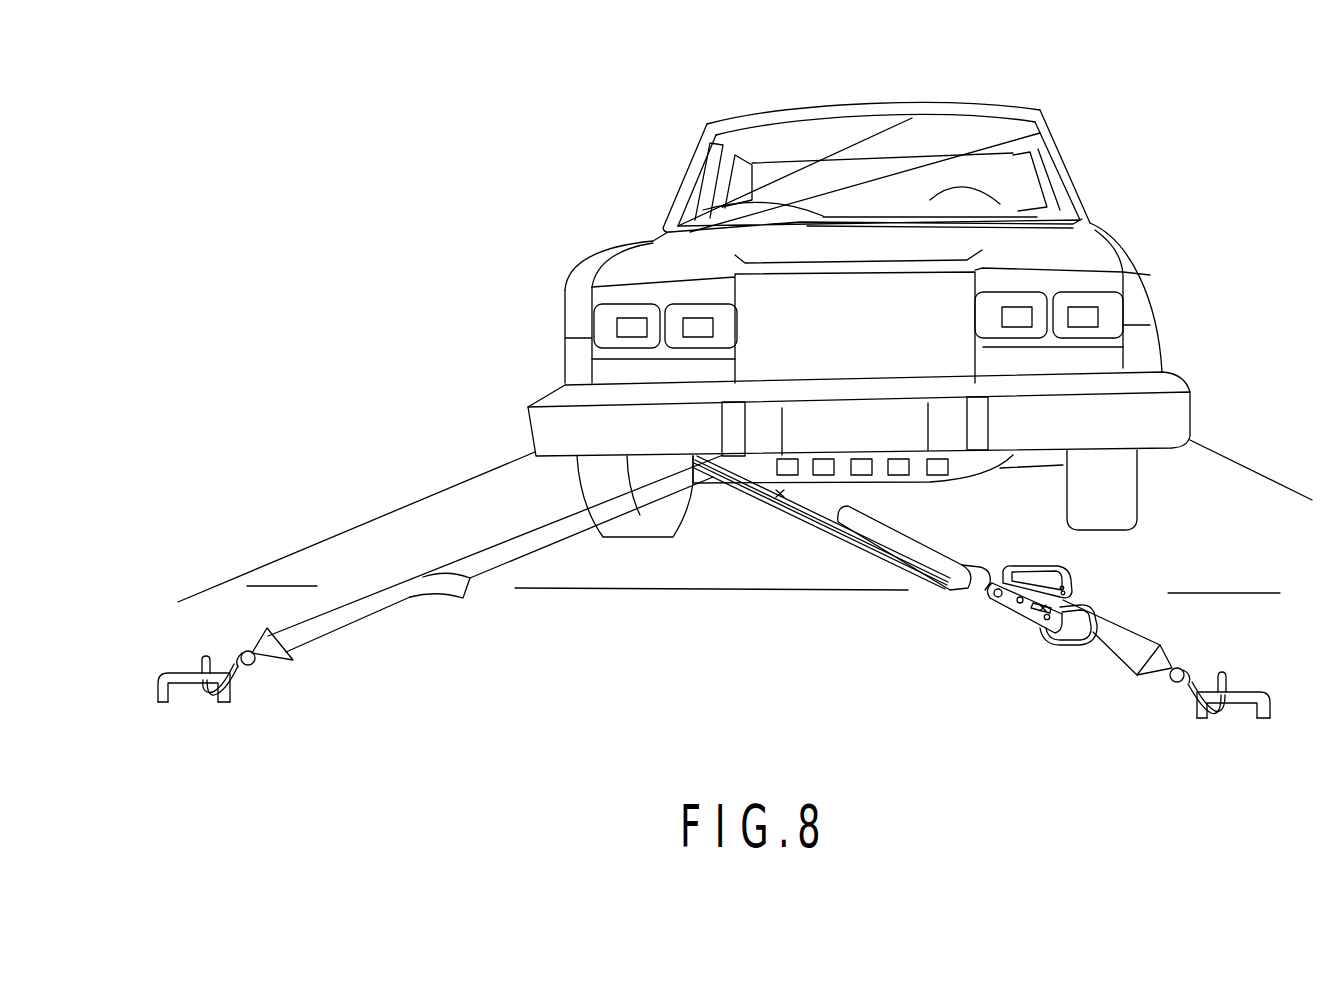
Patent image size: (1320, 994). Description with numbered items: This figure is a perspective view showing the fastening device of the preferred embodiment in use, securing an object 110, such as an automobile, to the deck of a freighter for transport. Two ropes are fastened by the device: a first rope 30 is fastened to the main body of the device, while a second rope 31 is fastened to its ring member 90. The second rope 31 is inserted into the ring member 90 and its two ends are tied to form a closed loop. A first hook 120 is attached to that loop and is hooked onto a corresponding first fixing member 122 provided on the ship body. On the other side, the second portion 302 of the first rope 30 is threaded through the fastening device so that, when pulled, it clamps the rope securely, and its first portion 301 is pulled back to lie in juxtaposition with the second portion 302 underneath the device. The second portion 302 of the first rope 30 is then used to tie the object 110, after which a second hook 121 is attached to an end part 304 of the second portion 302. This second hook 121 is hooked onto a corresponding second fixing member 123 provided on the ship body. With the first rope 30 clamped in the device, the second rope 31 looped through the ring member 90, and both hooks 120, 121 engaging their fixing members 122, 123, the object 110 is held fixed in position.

The object 110 is at (1143, 262).
The first rope 30 is at (808, 512).
The first portion 301 is at (910, 550).
The second portion 302 is at (778, 494).
The end part 304 is at (407, 597).
The ring member 90 is at (1050, 643).
The second rope 31 is at (1117, 660).
The first hook 120 is at (1187, 700).
The second hook 121 is at (233, 687).
The first fixing member 122 is at (1242, 707).
The second fixing member 123 is at (185, 685).